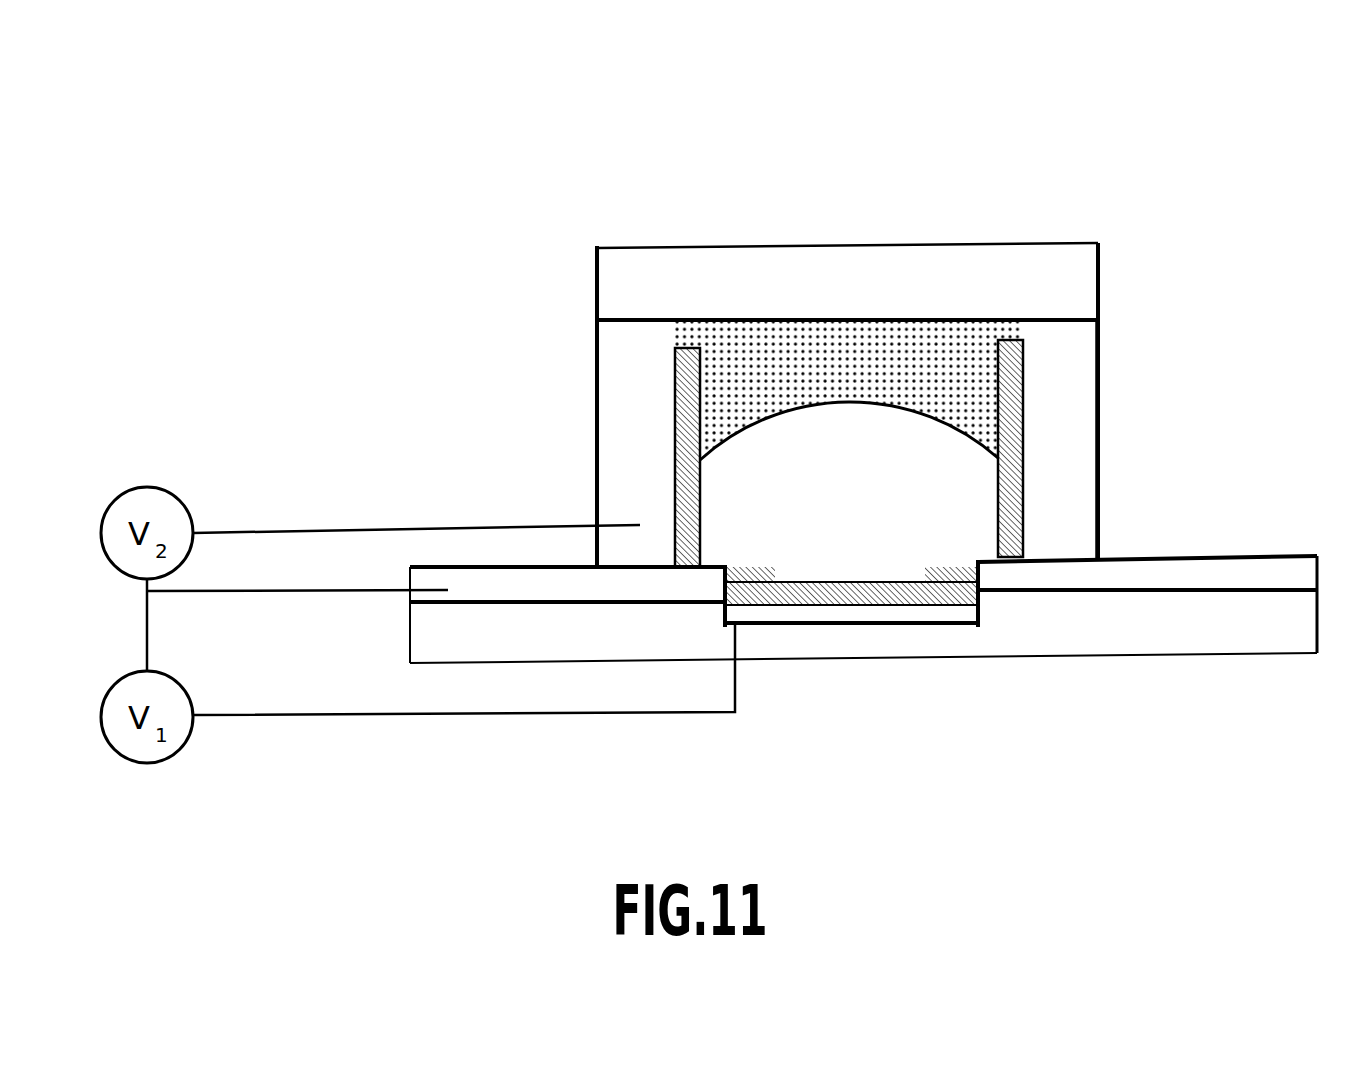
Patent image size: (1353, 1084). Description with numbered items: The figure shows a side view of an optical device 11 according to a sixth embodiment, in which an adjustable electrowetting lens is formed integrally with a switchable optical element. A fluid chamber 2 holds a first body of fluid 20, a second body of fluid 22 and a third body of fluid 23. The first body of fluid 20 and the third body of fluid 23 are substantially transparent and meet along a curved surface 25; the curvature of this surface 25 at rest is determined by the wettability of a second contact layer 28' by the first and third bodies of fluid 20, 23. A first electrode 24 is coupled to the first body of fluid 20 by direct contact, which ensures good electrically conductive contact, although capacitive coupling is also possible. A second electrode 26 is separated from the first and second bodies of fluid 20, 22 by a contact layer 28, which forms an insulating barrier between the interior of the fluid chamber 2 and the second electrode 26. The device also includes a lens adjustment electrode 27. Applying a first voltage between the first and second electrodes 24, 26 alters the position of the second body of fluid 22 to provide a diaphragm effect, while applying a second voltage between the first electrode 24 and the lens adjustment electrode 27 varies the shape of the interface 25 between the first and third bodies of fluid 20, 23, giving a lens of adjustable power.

The optical device 11 is at (752, 140).
The fluid chamber 2 is at (1077, 283).
The first body of fluid 20 is at (733, 505).
The second body of fluid 22 is at (775, 568).
The third body of fluid 23 is at (728, 401).
The first electrode 24 is at (555, 587).
The curved surface 25 is at (810, 404).
The second electrode 26 is at (873, 617).
The lens adjustment electrode 27 is at (1078, 447).
The contact layer 28 is at (1000, 524).
The second contact layer 28' is at (557, 452).